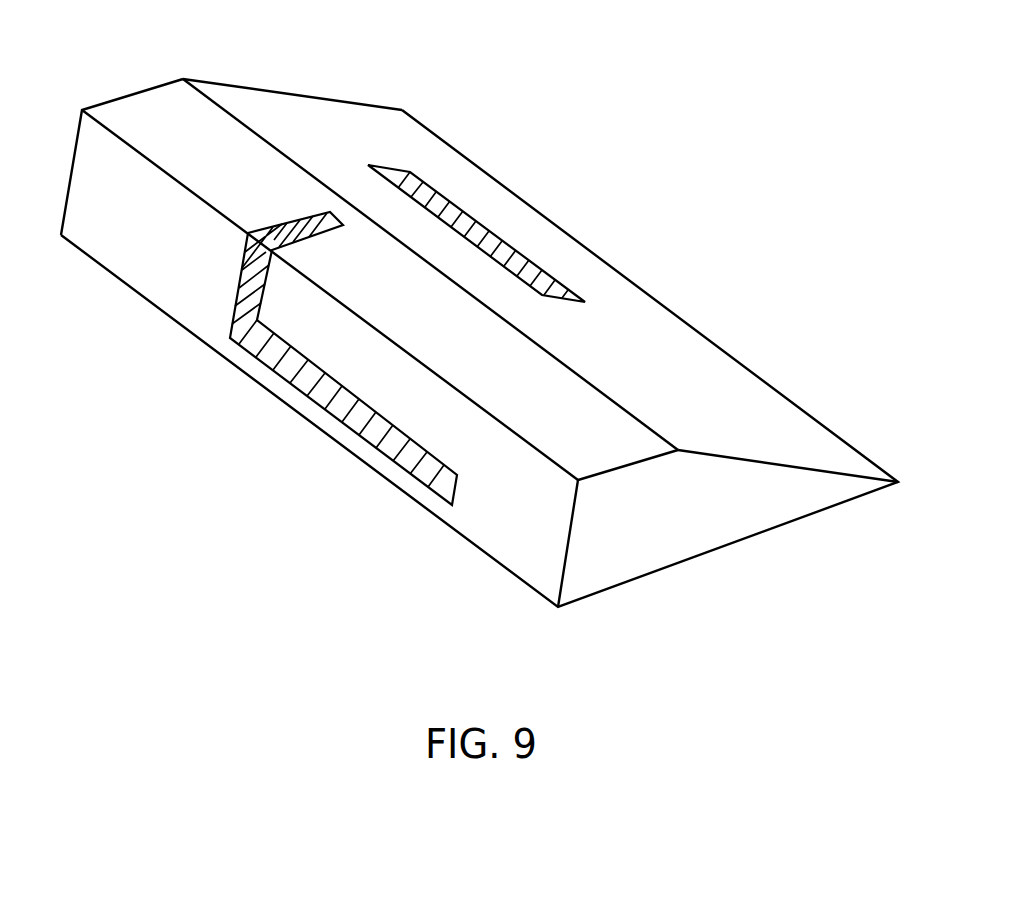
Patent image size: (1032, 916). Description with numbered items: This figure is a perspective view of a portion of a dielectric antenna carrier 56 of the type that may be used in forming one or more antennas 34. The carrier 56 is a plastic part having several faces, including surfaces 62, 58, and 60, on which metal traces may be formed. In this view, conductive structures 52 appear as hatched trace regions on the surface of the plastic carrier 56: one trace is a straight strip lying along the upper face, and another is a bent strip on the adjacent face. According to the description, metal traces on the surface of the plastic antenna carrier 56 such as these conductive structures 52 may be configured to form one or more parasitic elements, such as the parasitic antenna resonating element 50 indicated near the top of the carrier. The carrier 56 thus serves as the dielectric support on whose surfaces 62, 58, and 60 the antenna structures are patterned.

The antenna 34 is at (556, 69).
The parasitic antenna resonating element 50 is at (380, 126).
The conductive structures 52 is at (480, 232).
The carrier 56 is at (648, 565).
The surface 58 is at (160, 95).
The surface 60 is at (248, 93).
The surface 62 is at (80, 177).